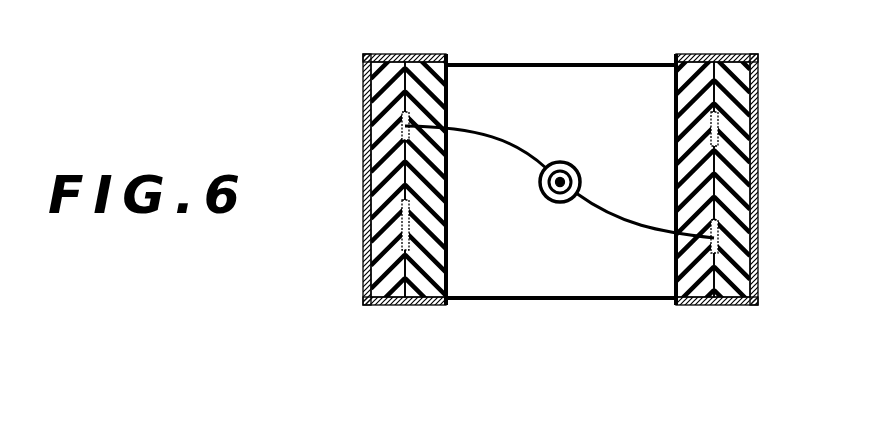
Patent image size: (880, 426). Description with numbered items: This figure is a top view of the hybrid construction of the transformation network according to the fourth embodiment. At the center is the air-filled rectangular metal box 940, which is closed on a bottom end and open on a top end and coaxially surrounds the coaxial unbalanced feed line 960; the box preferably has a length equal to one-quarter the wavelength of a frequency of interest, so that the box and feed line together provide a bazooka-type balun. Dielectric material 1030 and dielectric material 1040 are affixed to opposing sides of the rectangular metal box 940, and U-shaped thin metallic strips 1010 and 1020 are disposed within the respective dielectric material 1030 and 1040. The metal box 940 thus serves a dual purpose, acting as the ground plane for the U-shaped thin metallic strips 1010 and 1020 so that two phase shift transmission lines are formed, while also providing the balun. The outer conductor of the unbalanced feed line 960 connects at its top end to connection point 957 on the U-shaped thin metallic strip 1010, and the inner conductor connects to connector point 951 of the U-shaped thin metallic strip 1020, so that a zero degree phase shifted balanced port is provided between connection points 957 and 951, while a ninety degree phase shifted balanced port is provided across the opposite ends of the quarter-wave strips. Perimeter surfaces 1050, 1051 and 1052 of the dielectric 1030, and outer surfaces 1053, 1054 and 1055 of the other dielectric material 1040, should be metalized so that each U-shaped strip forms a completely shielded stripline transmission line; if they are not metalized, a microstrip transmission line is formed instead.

The rectangular metal box 940 is at (503, 301).
The connector point 951 is at (370, 96).
The connection point 957 is at (757, 218).
The coaxial unbalanced feed line 960 is at (558, 202).
The U-shaped thin metallic strip 1010 is at (735, 118).
The U-shaped thin metallic strip 1020 is at (366, 265).
The dielectric material 1030 is at (740, 166).
The dielectric material 1040 is at (412, 200).
The perimeter surface 1050 is at (700, 309).
The perimeter surface 1051 is at (757, 196).
The perimeter surface 1052 is at (704, 54).
The outer surface 1053 is at (384, 54).
The outer surface 1054 is at (378, 168).
The outer surface 1055 is at (397, 310).